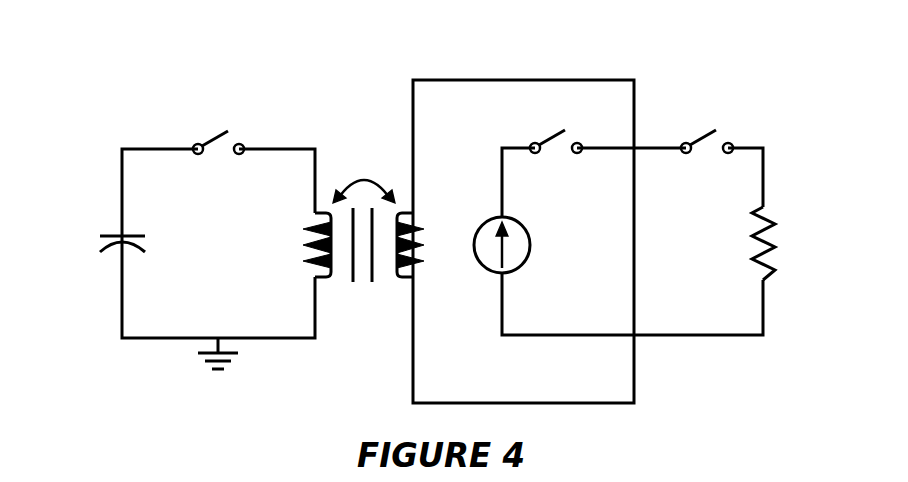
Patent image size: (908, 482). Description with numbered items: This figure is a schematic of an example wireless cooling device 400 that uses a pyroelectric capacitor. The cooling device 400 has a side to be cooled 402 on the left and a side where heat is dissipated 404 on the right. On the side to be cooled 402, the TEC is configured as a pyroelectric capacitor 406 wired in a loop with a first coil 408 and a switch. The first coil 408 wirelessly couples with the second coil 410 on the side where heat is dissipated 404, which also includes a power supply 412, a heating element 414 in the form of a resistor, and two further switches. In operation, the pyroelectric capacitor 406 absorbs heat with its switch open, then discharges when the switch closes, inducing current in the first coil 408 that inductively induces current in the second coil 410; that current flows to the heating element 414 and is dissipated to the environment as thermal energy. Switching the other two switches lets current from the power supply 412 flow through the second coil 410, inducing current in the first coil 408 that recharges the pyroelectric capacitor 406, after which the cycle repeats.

The wireless cooling device 400 is at (441, 47).
The side to be cooled 402 is at (100, 174).
The side where heat is dissipated 404 is at (748, 112).
The pyroelectric capacitor 406 is at (100, 250).
The first coil 408 is at (305, 243).
The second coil 410 is at (416, 242).
The power supply 412 is at (475, 243).
The heating element 414 is at (778, 238).